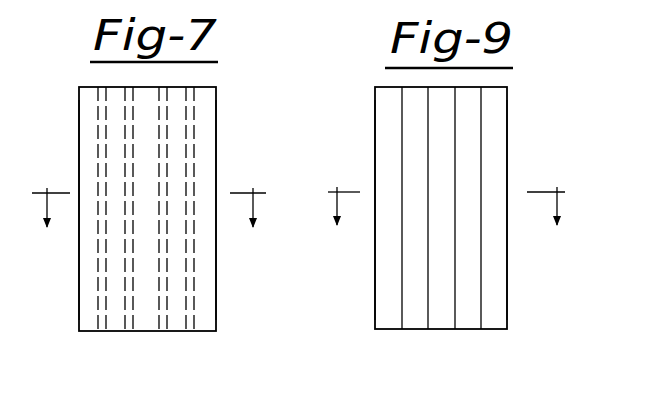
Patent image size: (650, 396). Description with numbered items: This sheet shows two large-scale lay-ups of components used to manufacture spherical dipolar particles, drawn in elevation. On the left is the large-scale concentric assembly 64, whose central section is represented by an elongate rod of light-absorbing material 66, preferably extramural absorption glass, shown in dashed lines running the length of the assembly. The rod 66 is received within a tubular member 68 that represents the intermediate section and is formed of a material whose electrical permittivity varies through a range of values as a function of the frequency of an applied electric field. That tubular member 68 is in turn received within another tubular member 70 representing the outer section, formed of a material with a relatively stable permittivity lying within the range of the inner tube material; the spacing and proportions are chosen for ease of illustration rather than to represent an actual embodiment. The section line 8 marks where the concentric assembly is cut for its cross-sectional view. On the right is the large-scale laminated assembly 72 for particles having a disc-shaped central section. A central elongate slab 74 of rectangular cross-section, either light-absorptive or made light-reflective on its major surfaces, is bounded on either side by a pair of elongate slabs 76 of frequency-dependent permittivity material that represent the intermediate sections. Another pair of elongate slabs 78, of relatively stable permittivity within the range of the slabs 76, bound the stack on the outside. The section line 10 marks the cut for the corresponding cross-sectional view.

In FIG. 7, the large-scale concentric assembly 64 is at (234, 127).
In FIG. 7, the elongate rod of light-absorbing material 66 is at (148, 338).
In FIG. 7, the tubular member 68 is at (105, 337).
In FIG. 7, the tubular member 70 is at (82, 308).
In FIG. 7, the section line 8- 8 is at (150, 229).
In FIG. 9, the large-scale laminated assembly 72 is at (535, 107).
In FIG. 9, the elongate slab 74 is at (438, 325).
In FIG. 9, the pair of elongate slabs 76 is at (418, 323).
In FIG. 9, the pair of elongate slabs 78 is at (378, 310).
In FIG. 9, the section line 10- 10 is at (457, 226).